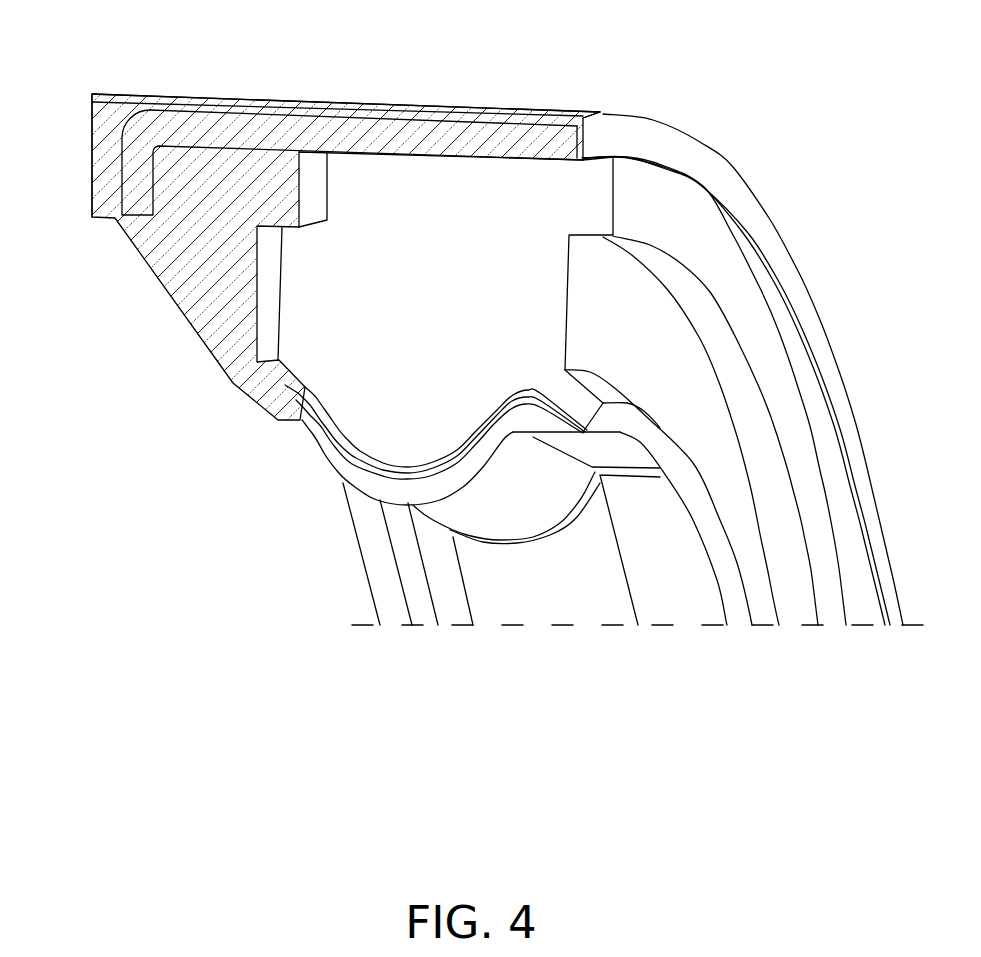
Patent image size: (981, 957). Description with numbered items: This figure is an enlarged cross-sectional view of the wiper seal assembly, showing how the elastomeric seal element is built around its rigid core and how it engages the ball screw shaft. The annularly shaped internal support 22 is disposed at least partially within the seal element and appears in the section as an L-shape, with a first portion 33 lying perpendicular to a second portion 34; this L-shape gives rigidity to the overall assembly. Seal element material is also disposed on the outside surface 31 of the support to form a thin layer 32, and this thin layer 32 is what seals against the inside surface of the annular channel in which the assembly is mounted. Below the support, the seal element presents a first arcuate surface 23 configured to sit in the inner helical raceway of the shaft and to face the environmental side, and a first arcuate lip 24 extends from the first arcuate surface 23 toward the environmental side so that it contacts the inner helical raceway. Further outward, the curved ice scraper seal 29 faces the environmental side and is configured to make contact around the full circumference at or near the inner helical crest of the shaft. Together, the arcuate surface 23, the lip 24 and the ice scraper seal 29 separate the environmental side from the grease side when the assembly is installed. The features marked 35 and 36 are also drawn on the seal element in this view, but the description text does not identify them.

The internal support 22 is at (467, 140).
The first arcuate surface 23 is at (385, 385).
The first arcuate lip 24 is at (347, 467).
The ice scraper seal 29 is at (720, 568).
The outside surface 31 is at (375, 118).
The thin layer 32 is at (302, 100).
The first portion 33 is at (228, 130).
The second portion 34 is at (140, 163).
The end face 35 is at (92, 127).
The chamfered edge 36 is at (585, 135).